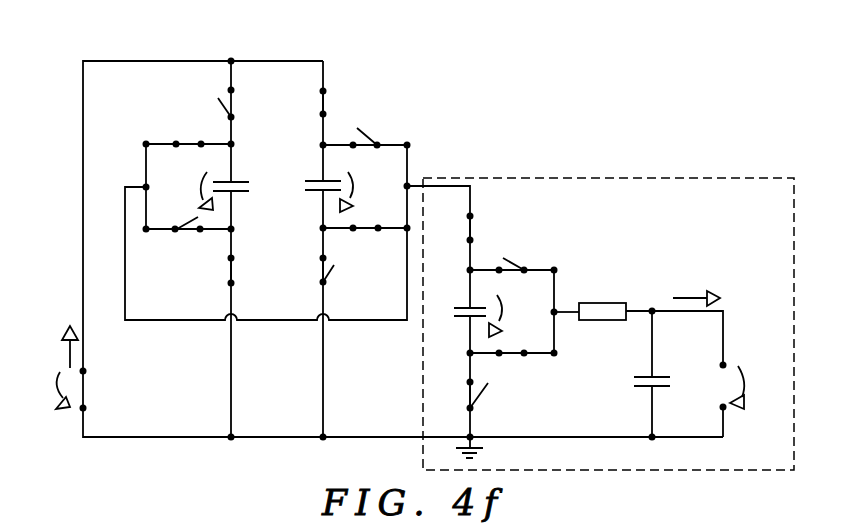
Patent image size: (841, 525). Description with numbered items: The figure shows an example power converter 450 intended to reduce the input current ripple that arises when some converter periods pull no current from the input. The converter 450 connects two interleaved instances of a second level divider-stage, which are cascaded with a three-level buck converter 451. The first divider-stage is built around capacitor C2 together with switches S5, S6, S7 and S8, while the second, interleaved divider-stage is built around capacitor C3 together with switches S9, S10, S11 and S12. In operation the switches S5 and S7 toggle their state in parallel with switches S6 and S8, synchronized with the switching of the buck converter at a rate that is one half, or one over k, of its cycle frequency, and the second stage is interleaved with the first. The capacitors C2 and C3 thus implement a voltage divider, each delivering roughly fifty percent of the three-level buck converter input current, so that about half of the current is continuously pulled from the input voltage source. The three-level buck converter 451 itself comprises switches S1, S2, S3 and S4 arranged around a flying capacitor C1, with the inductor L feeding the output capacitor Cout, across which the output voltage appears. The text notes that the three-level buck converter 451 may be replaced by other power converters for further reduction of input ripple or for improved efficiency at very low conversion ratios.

The converter 450 is at (158, 42).
The three-level buck converter 451 is at (618, 177).
The switch S1 is at (458, 228).
The switch S2 is at (512, 256).
The switch S3 is at (512, 364).
The switch S4 is at (465, 395).
The switch S5 is at (312, 103).
The switch S6 is at (365, 130).
The switch S7 is at (365, 239).
The switch S8 is at (315, 270).
The switch S9 is at (236, 104).
The switch S10 is at (189, 130).
The switch S11 is at (189, 235).
The switch S12 is at (248, 271).
The capacitor C1 is at (461, 321).
The capacitor C2 is at (319, 199).
The capacitor C3 is at (236, 199).
The inductor L is at (602, 301).
The output capacitor Cout is at (670, 374).